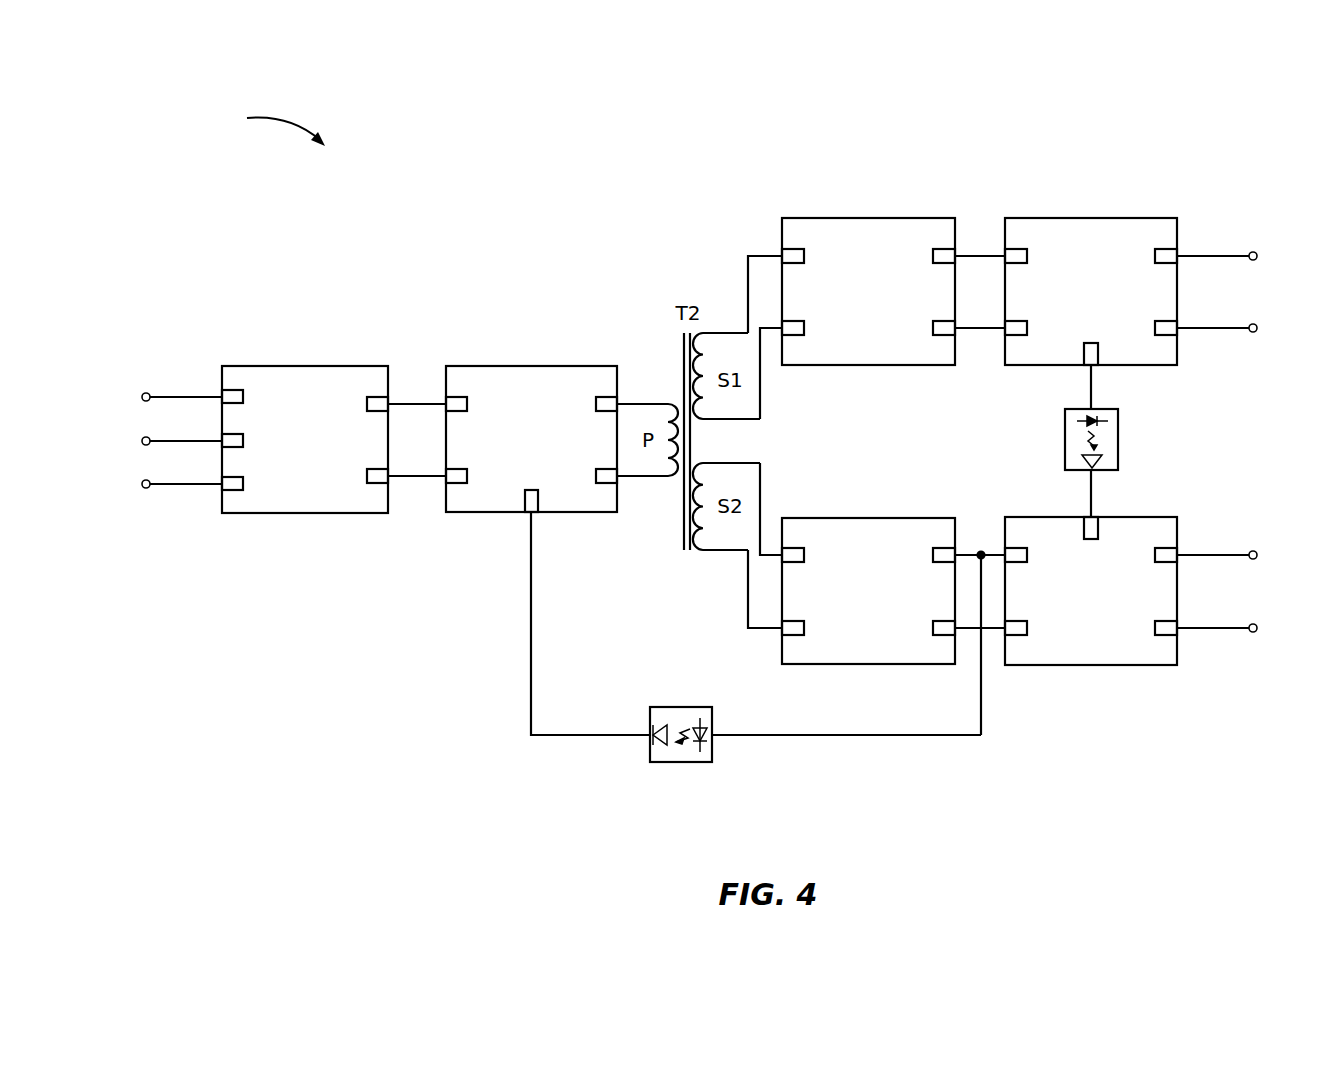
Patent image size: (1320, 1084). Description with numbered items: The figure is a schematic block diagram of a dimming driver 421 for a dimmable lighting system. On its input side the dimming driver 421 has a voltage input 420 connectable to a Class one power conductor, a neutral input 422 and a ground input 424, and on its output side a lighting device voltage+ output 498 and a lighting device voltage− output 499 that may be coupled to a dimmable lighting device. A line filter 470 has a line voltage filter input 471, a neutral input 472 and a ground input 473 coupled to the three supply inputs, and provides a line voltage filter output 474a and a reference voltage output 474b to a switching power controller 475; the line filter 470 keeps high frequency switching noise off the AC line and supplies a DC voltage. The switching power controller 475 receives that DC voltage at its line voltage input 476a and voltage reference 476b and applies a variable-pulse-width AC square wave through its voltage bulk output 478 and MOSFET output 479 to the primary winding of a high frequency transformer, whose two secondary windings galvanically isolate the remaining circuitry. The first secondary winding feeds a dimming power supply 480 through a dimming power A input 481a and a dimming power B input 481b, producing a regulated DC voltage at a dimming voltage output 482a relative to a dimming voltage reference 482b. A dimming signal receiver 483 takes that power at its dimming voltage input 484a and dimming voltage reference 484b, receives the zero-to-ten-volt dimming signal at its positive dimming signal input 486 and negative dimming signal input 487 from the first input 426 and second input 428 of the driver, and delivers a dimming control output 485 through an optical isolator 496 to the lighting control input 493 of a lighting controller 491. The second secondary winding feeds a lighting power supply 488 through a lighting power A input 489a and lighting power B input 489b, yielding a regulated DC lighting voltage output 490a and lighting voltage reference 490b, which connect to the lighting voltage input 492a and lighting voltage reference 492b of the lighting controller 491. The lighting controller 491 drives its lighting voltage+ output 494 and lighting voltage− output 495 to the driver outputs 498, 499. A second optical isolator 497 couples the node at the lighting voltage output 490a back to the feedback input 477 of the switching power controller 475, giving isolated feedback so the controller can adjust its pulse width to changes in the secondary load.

The dimming driver 421 is at (259, 128).
The voltage input 420 is at (147, 392).
The neutral input 422 is at (147, 436).
The ground input 424 is at (147, 479).
The line filter 470 is at (300, 514).
The line voltage filter input 471 is at (244, 397).
The neutral input 472 is at (244, 441).
The ground input 473 is at (244, 484).
The line voltage filter output 474a is at (377, 412).
The reference voltage output 474b is at (377, 484).
The switching power controller 475 is at (508, 513).
The line voltage input 476a is at (457, 397).
The voltage reference 476b is at (457, 469).
The feedback input 477 is at (531, 490).
The voltage bulk output 478 is at (605, 411).
The MOSFET output 479 is at (605, 484).
The dimming power supply 480 is at (846, 366).
The dimming power A input 481a is at (795, 264).
The dimming power B input 481b is at (795, 336).
The dimming voltage output 482a is at (943, 249).
The dimming voltage reference 482b is at (943, 321).
The dimming signal receiver 483 is at (1066, 366).
The dimming voltage input 484a is at (1019, 249).
The dimming voltage reference 484b is at (1019, 321).
The dimming control output 485 is at (1091, 343).
The 0-10V+ input 486 is at (1165, 263).
The 0-10V− input 487 is at (1165, 335).
The first input 426 is at (1253, 252).
The second input 428 is at (1253, 324).
The optical isolator 496 is at (1065, 441).
The lighting controller 491 is at (1070, 517).
The lighting voltage input 492a is at (1018, 562).
The lighting voltage reference 492b is at (1018, 635).
The lighting control input 493 is at (1084, 534).
The lighting voltage+ output 494 is at (1164, 548).
The lighting voltage− output 495 is at (1164, 621).
The lighting device voltage+ output 498 is at (1253, 551).
The lighting device voltage− output 499 is at (1253, 624).
The lighting power supply 488 is at (846, 518).
The lighting power A input 489a is at (795, 562).
The lighting power B input 489b is at (795, 635).
The lighting voltage output 490a is at (944, 548).
The lighting voltage reference 490b is at (944, 621).
The optical isolator 497 is at (681, 708).